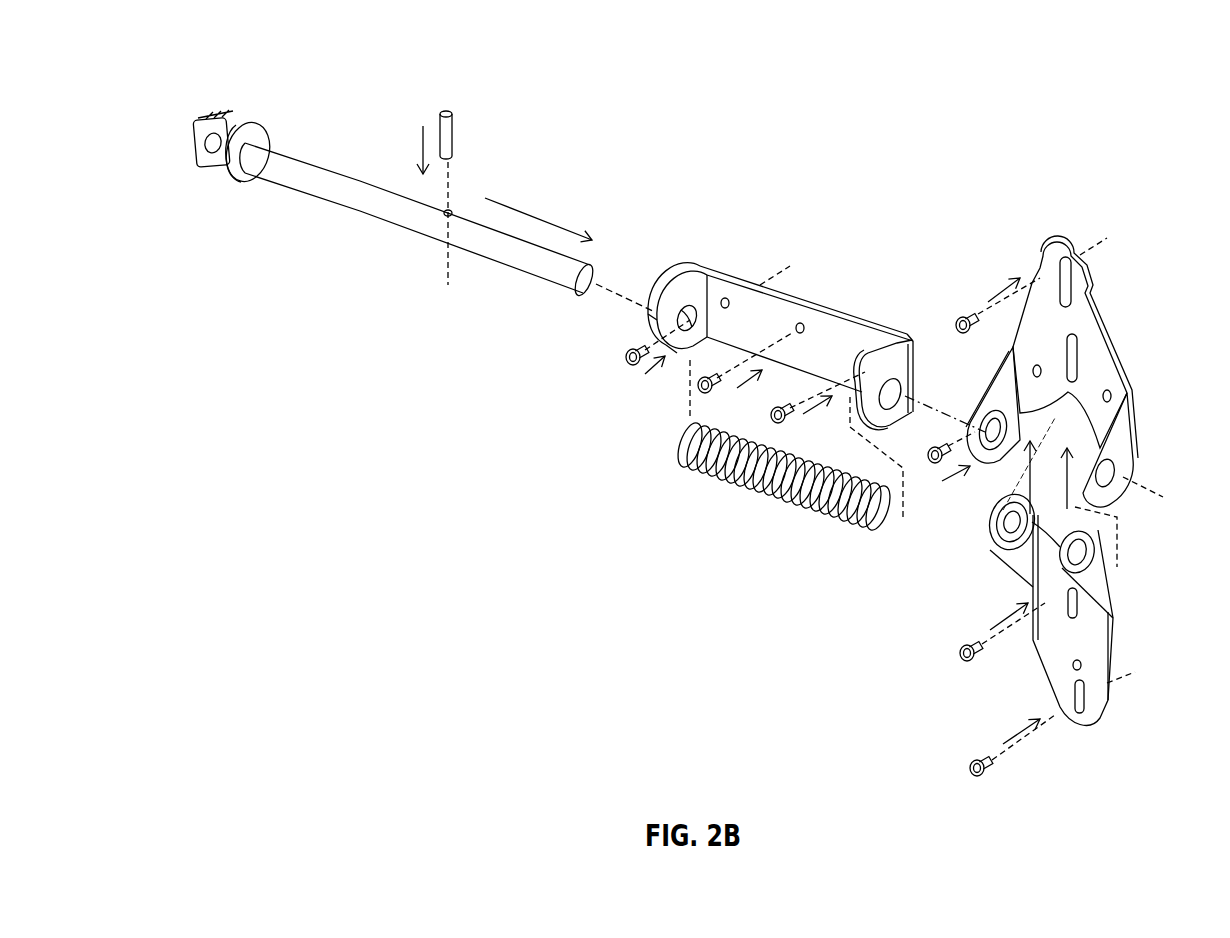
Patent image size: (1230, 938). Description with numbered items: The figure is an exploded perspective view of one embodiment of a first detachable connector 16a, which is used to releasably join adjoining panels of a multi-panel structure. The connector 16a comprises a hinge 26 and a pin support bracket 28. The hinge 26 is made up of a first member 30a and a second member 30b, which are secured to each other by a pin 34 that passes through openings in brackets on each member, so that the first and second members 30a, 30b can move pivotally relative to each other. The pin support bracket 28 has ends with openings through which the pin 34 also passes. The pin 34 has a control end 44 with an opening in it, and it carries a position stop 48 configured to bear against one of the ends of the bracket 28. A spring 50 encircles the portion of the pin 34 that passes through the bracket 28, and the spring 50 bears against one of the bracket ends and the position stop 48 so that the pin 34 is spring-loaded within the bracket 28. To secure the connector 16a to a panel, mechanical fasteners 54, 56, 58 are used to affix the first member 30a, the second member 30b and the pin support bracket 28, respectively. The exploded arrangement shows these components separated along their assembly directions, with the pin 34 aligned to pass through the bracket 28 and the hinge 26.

The first detachable connector 16a is at (640, 142).
The hinge 26 is at (1040, 256).
The pin support bracket 28 is at (758, 312).
The first member 30a is at (1093, 349).
The second member 30b is at (1100, 645).
The pin 34 is at (286, 164).
The control end 44 is at (224, 168).
The position stop 48 is at (450, 132).
The spring 50 is at (793, 382).
The mechanical fasteners 54 is at (933, 447).
The mechanical fasteners 56 is at (960, 660).
The mechanical fasteners 58 is at (770, 416).